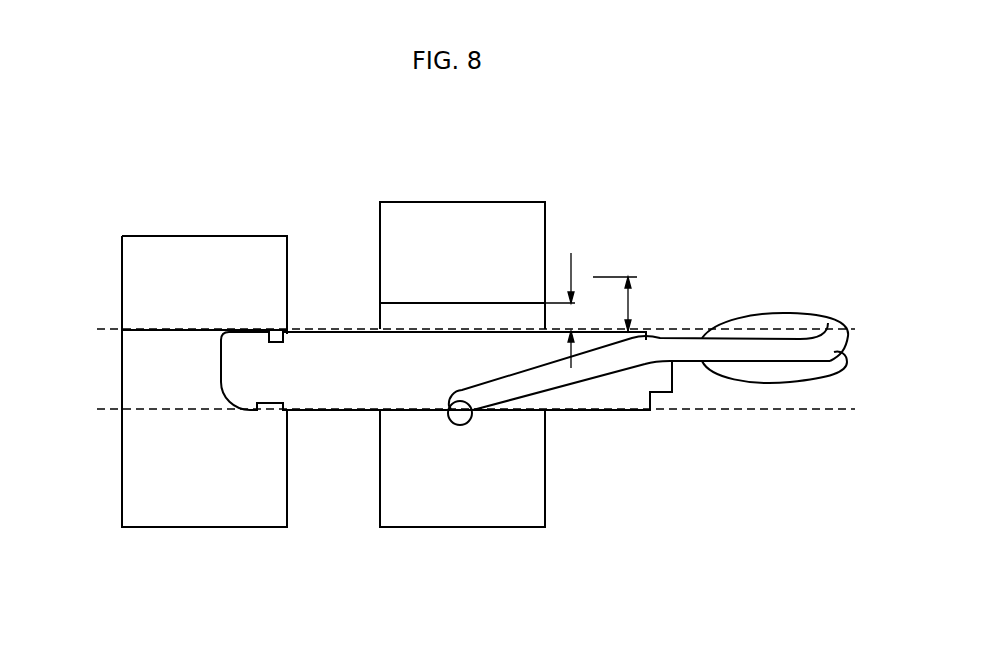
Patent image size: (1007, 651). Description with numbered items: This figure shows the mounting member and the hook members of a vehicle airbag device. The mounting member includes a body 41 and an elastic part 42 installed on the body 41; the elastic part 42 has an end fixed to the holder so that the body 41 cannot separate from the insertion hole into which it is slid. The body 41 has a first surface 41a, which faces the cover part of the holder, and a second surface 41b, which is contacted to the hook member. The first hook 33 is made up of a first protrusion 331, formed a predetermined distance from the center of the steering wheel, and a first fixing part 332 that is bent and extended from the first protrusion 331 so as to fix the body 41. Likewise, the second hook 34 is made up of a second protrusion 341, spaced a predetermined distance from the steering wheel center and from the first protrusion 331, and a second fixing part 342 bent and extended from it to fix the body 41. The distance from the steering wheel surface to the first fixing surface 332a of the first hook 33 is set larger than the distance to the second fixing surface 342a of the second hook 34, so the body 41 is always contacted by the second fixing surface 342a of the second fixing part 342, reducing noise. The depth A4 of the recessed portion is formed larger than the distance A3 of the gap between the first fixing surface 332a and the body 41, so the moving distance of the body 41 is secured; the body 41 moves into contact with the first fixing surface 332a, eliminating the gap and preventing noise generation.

The first hook 33 is at (481, 381).
The first protrusion 331 is at (515, 506).
The first fixing part 332 is at (452, 232).
The first fixing surface 332a is at (462, 305).
The second hook 34 is at (164, 424).
The second protrusion 341 is at (166, 489).
The second fixing part 342 is at (164, 304).
The second fixing surface 342a is at (185, 333).
The body 41 is at (446, 392).
The first surface 41a is at (318, 412).
The second surface 41b is at (340, 330).
The elastic part 42 is at (726, 350).
The distance of the gap A3 is at (572, 323).
The depth of the recessed portion A4 is at (628, 298).